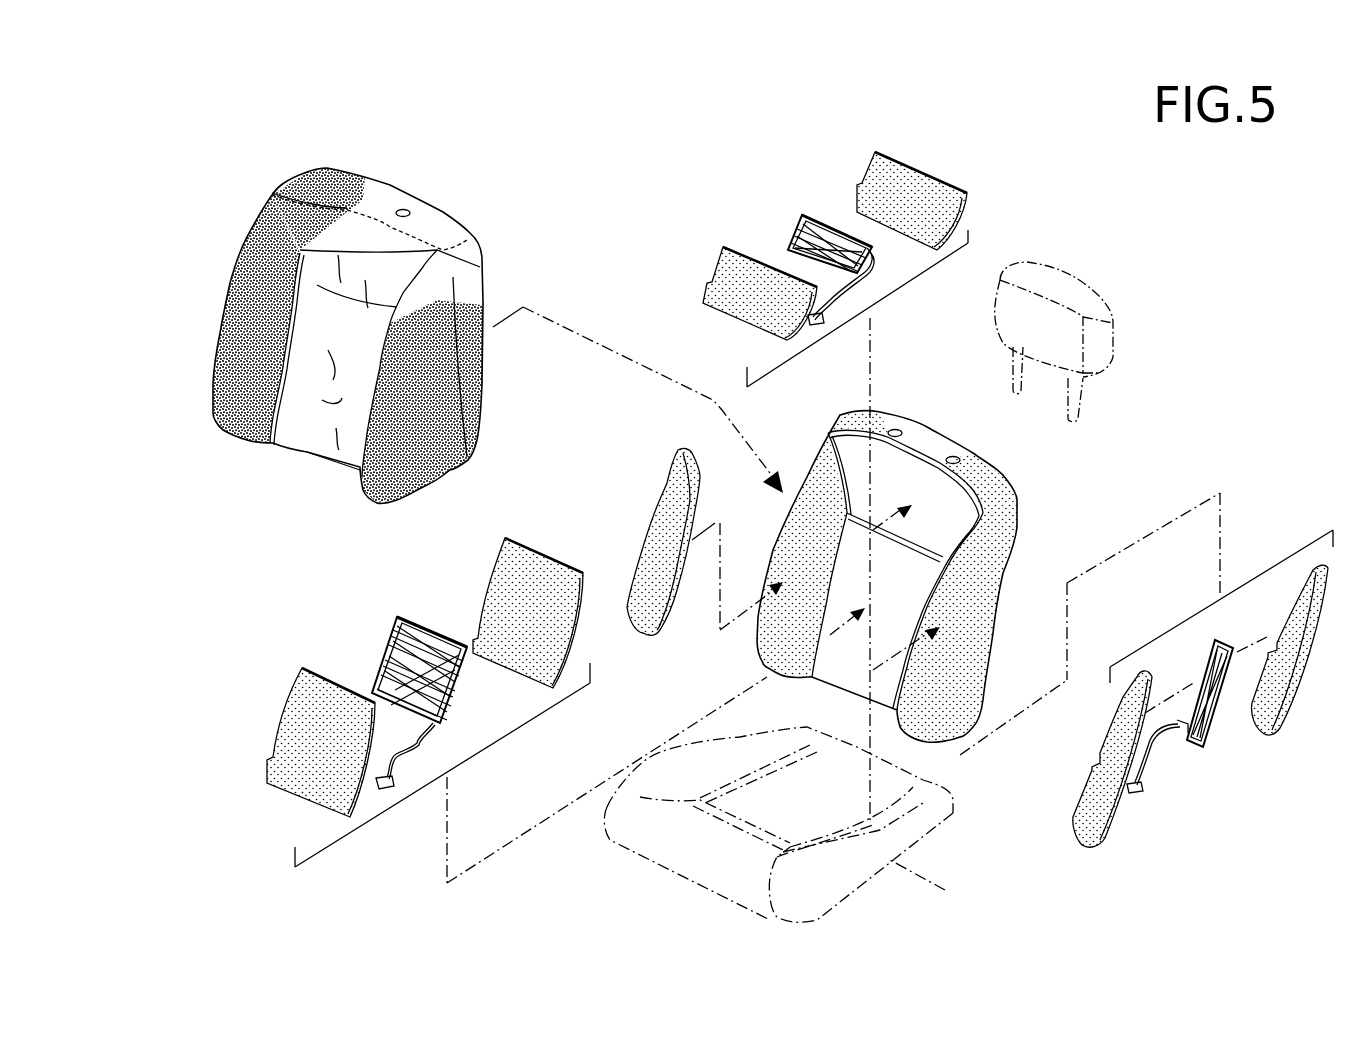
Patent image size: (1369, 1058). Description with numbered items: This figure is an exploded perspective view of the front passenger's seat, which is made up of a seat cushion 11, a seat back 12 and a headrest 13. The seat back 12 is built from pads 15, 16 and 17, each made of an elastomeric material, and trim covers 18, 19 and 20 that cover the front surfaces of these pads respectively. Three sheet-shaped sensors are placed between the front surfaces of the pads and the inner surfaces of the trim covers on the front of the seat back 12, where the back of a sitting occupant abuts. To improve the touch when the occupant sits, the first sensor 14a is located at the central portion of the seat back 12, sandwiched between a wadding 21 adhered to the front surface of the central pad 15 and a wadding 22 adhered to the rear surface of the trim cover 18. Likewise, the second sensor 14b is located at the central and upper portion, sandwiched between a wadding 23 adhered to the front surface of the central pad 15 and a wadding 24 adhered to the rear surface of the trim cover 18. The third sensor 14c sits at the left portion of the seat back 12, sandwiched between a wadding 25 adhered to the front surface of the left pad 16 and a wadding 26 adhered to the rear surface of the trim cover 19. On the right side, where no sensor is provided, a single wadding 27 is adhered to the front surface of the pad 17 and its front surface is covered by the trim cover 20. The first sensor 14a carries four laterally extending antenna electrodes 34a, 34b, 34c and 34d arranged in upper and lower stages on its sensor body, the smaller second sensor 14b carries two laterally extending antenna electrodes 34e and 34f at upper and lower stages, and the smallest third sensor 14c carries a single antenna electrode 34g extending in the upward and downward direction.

The seat cushion 11 is at (792, 824).
The seat back 12 is at (943, 577).
The headrest 13 is at (1083, 283).
The first sensor 14a is at (403, 645).
The second sensor 14b is at (768, 238).
The third sensor 14c is at (1222, 729).
The central pad 15 is at (857, 673).
The left pad 16 is at (970, 667).
The pad 17 is at (793, 547).
The trim cover 18 is at (307, 452).
The trim cover 19 is at (367, 460).
The trim cover 20 is at (331, 354).
The wadding 21 is at (547, 567).
The wadding 22 is at (303, 747).
The wadding 23 is at (935, 192).
The wadding 24 is at (740, 310).
The wadding 25 is at (1287, 677).
The wadding 26 is at (1097, 780).
The wadding 27 is at (658, 515).
The antenna electrode 34a is at (433, 713).
The antenna electrode 34b is at (387, 663).
The antenna electrode 34c is at (395, 640).
The antenna electrode 34d is at (393, 628).
The antenna electrode 34e is at (797, 242).
The antenna electrode 34f is at (817, 223).
The antenna electrode 34g is at (1193, 733).